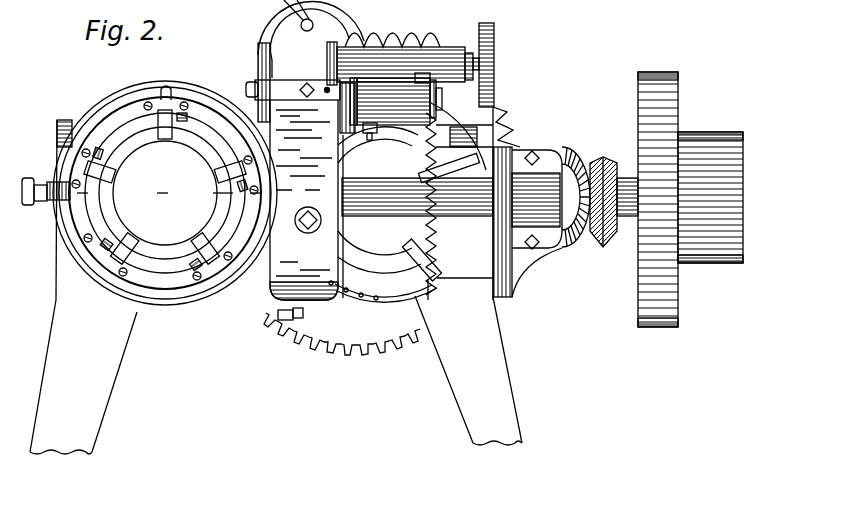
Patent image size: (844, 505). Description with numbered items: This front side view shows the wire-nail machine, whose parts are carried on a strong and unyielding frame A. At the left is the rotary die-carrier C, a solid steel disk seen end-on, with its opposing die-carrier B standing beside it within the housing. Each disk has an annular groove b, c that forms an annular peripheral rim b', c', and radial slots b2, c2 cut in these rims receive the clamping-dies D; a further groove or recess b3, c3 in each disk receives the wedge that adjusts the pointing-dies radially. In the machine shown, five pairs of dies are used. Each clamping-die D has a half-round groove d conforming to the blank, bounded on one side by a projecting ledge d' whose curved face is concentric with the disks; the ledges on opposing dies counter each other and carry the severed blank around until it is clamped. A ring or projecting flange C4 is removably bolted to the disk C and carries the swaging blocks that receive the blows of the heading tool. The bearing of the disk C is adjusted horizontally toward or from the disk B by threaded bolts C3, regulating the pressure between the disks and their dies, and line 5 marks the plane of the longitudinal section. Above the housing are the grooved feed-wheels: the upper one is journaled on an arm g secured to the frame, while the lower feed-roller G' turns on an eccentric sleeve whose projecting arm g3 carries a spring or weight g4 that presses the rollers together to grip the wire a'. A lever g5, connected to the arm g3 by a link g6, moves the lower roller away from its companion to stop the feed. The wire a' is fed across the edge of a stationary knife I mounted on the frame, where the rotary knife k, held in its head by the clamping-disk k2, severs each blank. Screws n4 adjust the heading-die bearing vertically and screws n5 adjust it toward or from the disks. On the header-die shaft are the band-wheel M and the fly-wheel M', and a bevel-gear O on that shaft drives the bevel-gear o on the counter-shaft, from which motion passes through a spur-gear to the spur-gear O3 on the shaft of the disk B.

The ring or projecting flange C4 is at (114, 103).
The rotary die-carrier disk C is at (168, 193).
The clamping-die D is at (100, 170).
The annular peripheral rim c' is at (183, 121).
The groove or recess c3 is at (219, 175).
The annular groove c is at (158, 207).
The radial slot or recess c2 is at (112, 256).
The threaded bolts C3 is at (30, 202).
The section line 5 is at (19, 188).
The frame A is at (276, 287).
The rotary cutter or knife k is at (257, 76).
The clamping-disk k2 is at (311, 40).
The stationary knife I is at (299, 190).
The wire a' is at (320, 110).
The screws n5 is at (310, 233).
The screws n4 is at (303, 314).
The lower feed-wheel G' is at (327, 87).
The frame or arm g is at (426, 46).
The lever g5 is at (468, 68).
The projecting arm or lever g3 is at (390, 106).
The link g6 is at (433, 100).
The half-round groove d is at (515, 203).
The spring or weight g4 is at (464, 340).
The rotary die-carrier disk B is at (407, 202).
The groove or recess b3 is at (402, 138).
The annular groove b is at (379, 252).
The annular peripheral rim b' is at (349, 289).
The radial slot or recess b2 is at (439, 204).
The projecting ledge d' is at (442, 225).
The spur-gear O3 is at (342, 334).
The bevel-gear o is at (580, 162).
The bevel-gear O is at (602, 158).
The fly-wheel M' is at (658, 199).
The band-wheel M is at (710, 197).